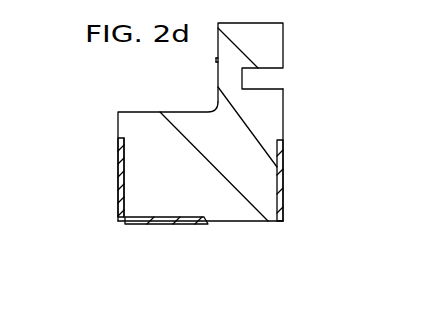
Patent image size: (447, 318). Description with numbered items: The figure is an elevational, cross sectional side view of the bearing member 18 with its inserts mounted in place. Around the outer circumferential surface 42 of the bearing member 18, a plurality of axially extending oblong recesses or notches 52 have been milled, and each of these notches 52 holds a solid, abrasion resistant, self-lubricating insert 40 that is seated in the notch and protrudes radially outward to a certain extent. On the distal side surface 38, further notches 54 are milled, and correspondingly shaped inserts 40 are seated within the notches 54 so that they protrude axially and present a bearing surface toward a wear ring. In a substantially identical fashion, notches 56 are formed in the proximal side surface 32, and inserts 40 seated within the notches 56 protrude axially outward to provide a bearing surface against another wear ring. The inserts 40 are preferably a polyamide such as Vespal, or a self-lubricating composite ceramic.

The bearing member 18 is at (297, 60).
The proximal side surface 32 is at (119, 158).
The distal side surface 38 is at (331, 149).
The insert 40 is at (199, 199).
The outer circumferential surface 42 is at (232, 238).
The recesses or notches 52 is at (158, 138).
The notches 54 is at (238, 83).
The notches 56 is at (197, 220).